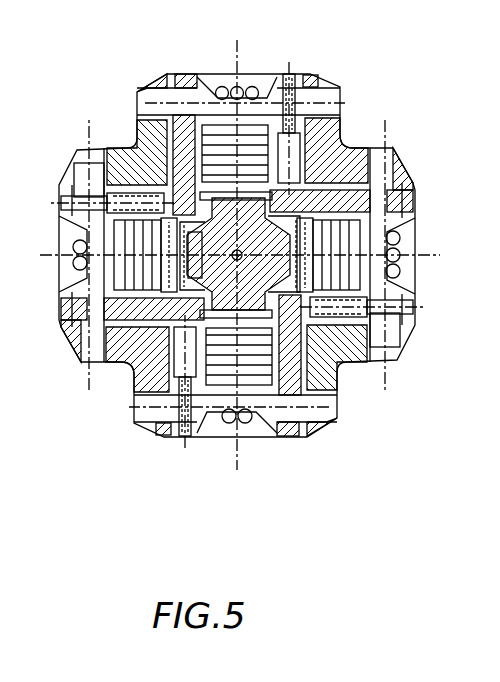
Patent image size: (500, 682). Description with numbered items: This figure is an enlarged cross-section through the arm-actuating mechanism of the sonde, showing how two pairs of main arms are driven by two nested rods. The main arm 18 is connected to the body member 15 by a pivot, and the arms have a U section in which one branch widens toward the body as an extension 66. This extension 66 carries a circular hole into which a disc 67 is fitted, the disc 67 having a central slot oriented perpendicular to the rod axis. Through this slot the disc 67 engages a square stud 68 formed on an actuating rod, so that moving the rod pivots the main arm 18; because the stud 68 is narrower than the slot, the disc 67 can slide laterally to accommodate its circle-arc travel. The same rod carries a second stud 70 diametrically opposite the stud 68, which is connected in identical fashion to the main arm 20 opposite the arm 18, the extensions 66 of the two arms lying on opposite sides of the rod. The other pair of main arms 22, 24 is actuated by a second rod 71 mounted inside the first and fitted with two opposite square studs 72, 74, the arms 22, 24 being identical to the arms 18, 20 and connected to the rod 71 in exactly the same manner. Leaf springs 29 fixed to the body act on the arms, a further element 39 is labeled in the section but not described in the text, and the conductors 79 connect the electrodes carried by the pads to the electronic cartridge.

The body member 15 is at (137, 160).
The main arm 18 is at (186, 74).
The main arm 20 is at (283, 434).
The main arm 22 is at (367, 203).
The main arm 24 is at (73, 337).
The leaf springs 29 is at (220, 133).
The bearing sleeve 39 is at (187, 248).
The extension 66 is at (142, 93).
The disc 67 is at (142, 323).
The square stud 68 is at (180, 270).
The second stud 70 is at (345, 366).
The second rod 71 is at (305, 178).
The square stud 72 is at (262, 176).
The square stud 74 is at (233, 307).
The conductors 79 is at (250, 91).